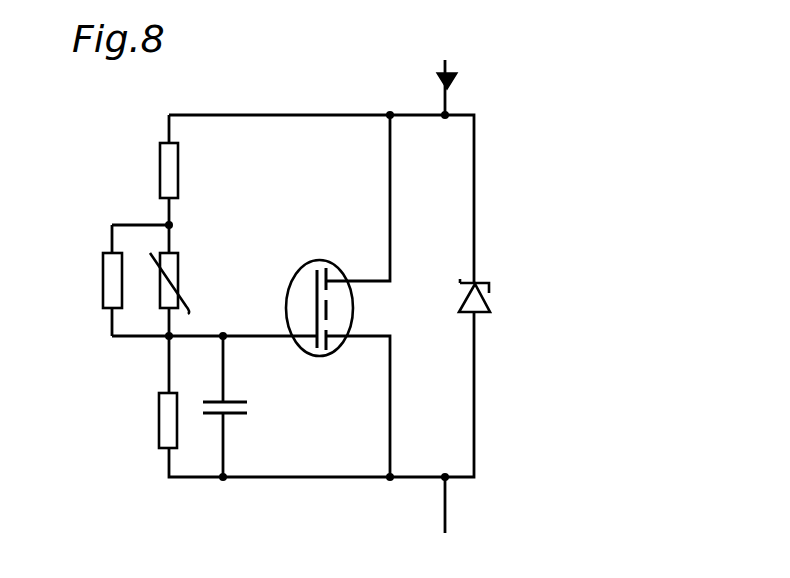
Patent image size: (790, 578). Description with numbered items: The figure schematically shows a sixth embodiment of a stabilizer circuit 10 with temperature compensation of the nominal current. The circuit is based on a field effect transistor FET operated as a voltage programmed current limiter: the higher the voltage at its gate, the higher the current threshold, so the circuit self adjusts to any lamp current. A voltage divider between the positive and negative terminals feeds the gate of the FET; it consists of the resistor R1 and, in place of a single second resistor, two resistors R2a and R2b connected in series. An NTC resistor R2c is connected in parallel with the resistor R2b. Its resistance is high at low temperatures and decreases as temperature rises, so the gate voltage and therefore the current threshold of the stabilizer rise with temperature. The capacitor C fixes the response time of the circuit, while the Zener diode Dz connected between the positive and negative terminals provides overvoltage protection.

The stabilizer circuit 10 is at (562, 212).
The resistor R2a is at (194, 170).
The resistor R2b is at (92, 280).
The NTC resistor R2c is at (189, 283).
The resistor R1 is at (144, 420).
The capacitor C is at (236, 393).
The field effect transistor FET is at (322, 290).
The Zener diode Dz is at (508, 297).